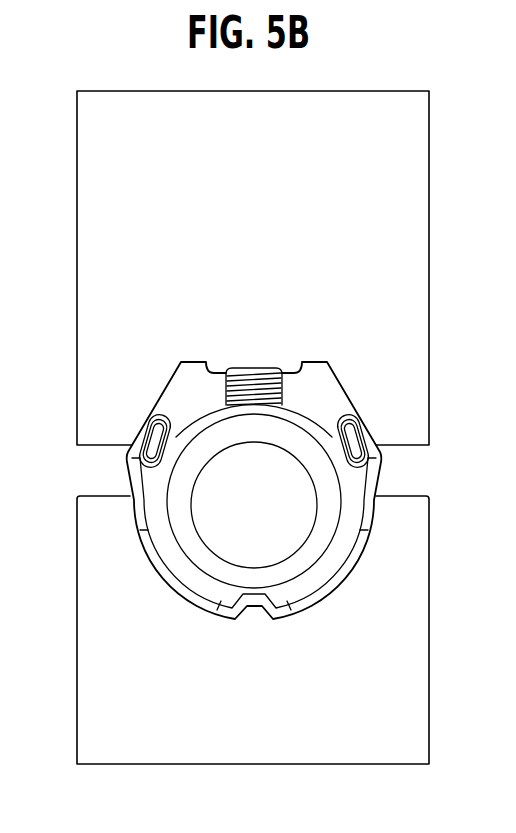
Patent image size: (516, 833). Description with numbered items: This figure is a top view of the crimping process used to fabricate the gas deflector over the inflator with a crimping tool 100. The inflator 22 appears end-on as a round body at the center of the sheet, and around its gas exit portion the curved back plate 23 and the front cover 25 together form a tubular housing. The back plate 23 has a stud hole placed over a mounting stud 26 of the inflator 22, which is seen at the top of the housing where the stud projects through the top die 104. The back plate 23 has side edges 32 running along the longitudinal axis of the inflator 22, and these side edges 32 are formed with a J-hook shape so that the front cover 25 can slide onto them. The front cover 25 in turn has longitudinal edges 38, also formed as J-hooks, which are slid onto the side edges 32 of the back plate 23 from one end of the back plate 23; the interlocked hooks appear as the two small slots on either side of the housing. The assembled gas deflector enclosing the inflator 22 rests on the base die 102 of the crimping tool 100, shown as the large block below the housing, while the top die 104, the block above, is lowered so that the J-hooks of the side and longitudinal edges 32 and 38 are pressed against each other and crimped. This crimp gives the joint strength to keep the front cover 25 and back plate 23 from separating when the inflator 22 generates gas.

The crimping tool 100 is at (54, 109).
The top die 104 is at (405, 150).
The base die 102 is at (303, 742).
The side edges 32 is at (365, 469).
The front cover 25 is at (178, 587).
The inflator 22 is at (297, 530).
The mounting stud 26 is at (262, 378).
The back plate 23 is at (200, 424).
The longitudinal edges 38 is at (352, 414).